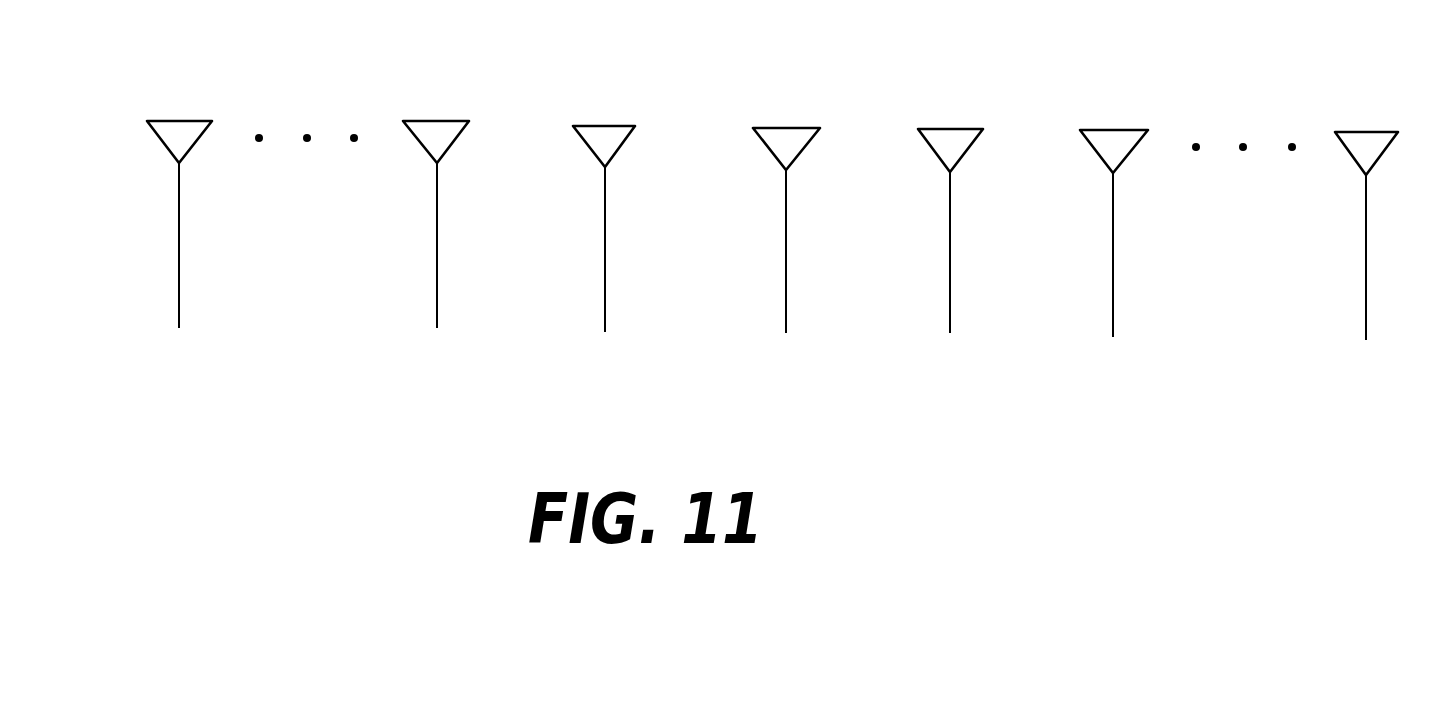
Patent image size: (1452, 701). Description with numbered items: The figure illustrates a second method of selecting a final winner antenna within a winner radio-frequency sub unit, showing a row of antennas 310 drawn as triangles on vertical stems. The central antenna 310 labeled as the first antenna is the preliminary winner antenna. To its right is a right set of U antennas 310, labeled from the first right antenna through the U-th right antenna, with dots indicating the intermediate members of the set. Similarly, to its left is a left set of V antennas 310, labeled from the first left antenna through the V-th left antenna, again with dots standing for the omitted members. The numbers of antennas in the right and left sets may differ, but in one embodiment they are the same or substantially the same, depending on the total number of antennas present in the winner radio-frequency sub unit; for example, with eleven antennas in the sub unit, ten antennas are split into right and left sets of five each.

The antenna 310 is at (774, 197).